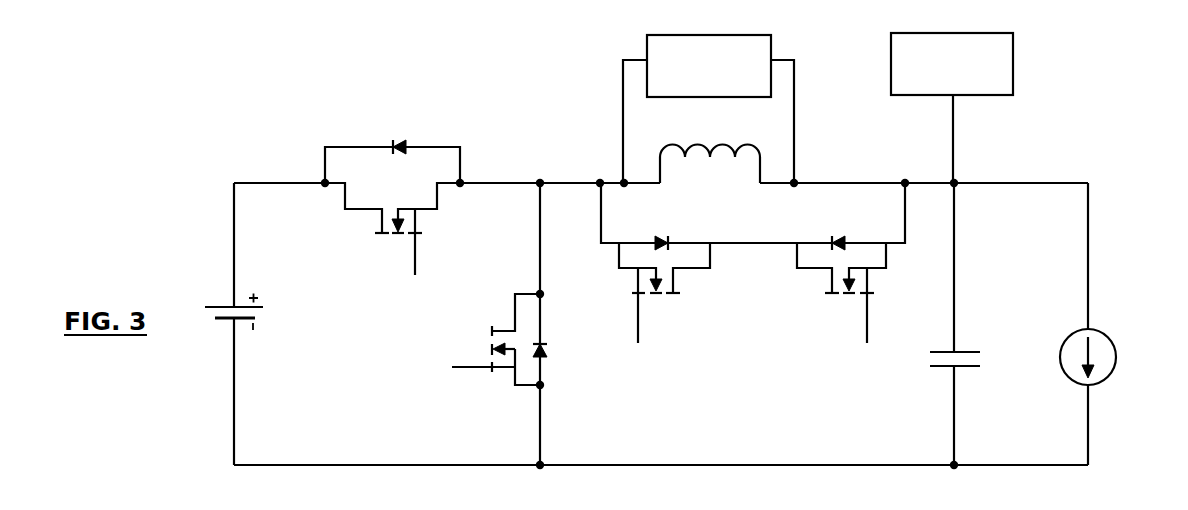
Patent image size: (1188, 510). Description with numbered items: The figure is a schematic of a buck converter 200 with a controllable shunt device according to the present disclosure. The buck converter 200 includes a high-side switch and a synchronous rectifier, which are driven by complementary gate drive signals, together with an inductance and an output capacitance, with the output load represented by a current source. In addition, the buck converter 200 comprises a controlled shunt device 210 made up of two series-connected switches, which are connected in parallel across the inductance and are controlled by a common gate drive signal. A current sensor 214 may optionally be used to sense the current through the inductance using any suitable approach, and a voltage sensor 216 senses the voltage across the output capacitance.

The buck converter 200 is at (211, 163).
The controlled shunt device 210 is at (759, 298).
The current sensor 214 is at (647, 46).
The voltage sensor 216 is at (891, 60).